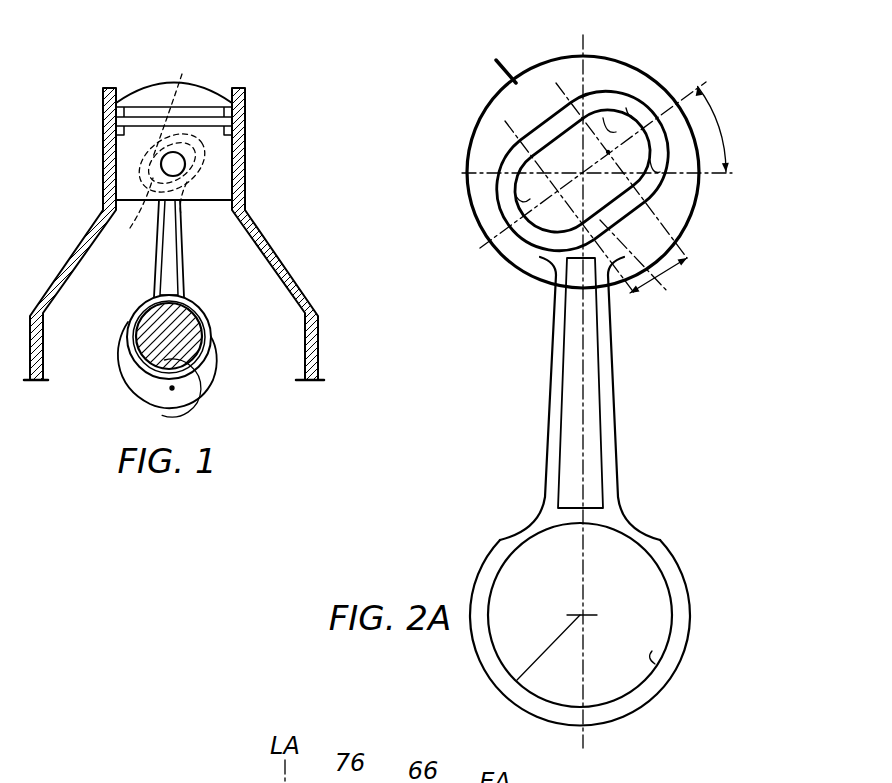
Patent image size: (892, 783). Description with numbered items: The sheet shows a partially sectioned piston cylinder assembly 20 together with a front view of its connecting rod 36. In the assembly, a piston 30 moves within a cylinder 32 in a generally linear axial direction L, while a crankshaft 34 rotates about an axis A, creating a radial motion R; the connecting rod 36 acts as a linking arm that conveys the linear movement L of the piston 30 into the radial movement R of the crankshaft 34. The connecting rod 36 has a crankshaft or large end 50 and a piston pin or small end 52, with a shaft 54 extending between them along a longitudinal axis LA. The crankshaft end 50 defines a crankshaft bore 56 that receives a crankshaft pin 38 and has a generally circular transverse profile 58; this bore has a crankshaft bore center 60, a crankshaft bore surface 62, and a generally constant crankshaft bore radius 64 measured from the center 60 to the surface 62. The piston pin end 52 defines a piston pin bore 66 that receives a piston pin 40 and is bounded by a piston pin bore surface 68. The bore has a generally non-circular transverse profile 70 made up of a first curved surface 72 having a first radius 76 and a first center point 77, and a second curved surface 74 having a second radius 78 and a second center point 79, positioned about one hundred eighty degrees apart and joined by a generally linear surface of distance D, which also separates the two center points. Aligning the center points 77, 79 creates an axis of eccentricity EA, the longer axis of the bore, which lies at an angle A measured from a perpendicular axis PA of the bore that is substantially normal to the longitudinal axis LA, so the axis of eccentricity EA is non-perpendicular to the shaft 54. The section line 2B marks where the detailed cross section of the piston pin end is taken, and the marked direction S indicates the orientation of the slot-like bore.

In FIG. 1, the piston cylinder assembly 20 is at (304, 66).
In FIG. 1, the piston 30 is at (218, 143).
In FIG. 1, the cylinder 32 is at (245, 183).
In FIG. 1, the crankshaft 34 is at (200, 393).
In FIG. 1, the connecting rod 36 is at (193, 249).
In FIG. 2A, the connecting rod 36 is at (780, 285).
In FIG. 1, the crankshaft pin 38 is at (187, 340).
In FIG. 1, the piston pin 40 is at (176, 164).
In FIG. 1, the crankshaft end 50 is at (106, 364).
In FIG. 2A, the crankshaft end 50 is at (724, 522).
In FIG. 1, the piston pin end 52 is at (136, 156).
In FIG. 2A, the piston pin end 52 is at (724, 80).
In FIG. 1, the shaft 54 is at (157, 260).
In FIG. 2A, the shaft 54 is at (613, 366).
In FIG. 1, the crankshaft bore 56 is at (153, 320).
In FIG. 2A, the crankshaft bore 56 is at (630, 575).
In FIG. 1, the transverse profile of crankshaft bore 58 is at (210, 362).
In FIG. 2A, the transverse profile of crankshaft bore 58 is at (677, 615).
In FIG. 2A, the crankshaft bore center 60 is at (584, 616).
In FIG. 2A, the crankshaft bore surface 62 is at (657, 656).
In FIG. 2A, the crankshaft bore radius 64 is at (545, 648).
In FIG. 1, the piston pin bore 66 is at (175, 102).
In FIG. 2A, the piston pin bore 66 is at (608, 150).
In FIG. 2A, the piston pin bore surface 68 is at (655, 176).
In FIG. 1, the transverse profile of piston pin bore 70 is at (151, 216).
In FIG. 2A, the transverse profile of piston pin bore 70 is at (660, 200).
In FIG. 2A, the first curved surface 72 is at (630, 112).
In FIG. 2A, the second curved surface 74 is at (522, 199).
In FIG. 2A, the first radius 76 is at (609, 115).
In FIG. 2A, the first center point 77 is at (665, 228).
In FIG. 2A, the second radius 78 is at (523, 257).
In FIG. 2A, the second center point 79 is at (533, 154).
In FIG. 1, the linear axial direction L is at (126, 30).
In FIG. 1, the axis / angle A is at (170, 390).
In FIG. 2A, the axis / angle A is at (623, 128).
In FIG. 1, the radial motion R is at (200, 387).
In FIG. 2A, the longitudinal axis LA is at (583, 392).
In FIG. 2A, the perpendicular axis PA is at (596, 174).
In FIG. 2A, the axis of eccentricity EA is at (693, 78).
In FIG. 2A, the slot axis S is at (672, 296).
In FIG. 2A, the distance D is at (690, 266).
In FIG. 2A, the section line 2B is at (490, 57).